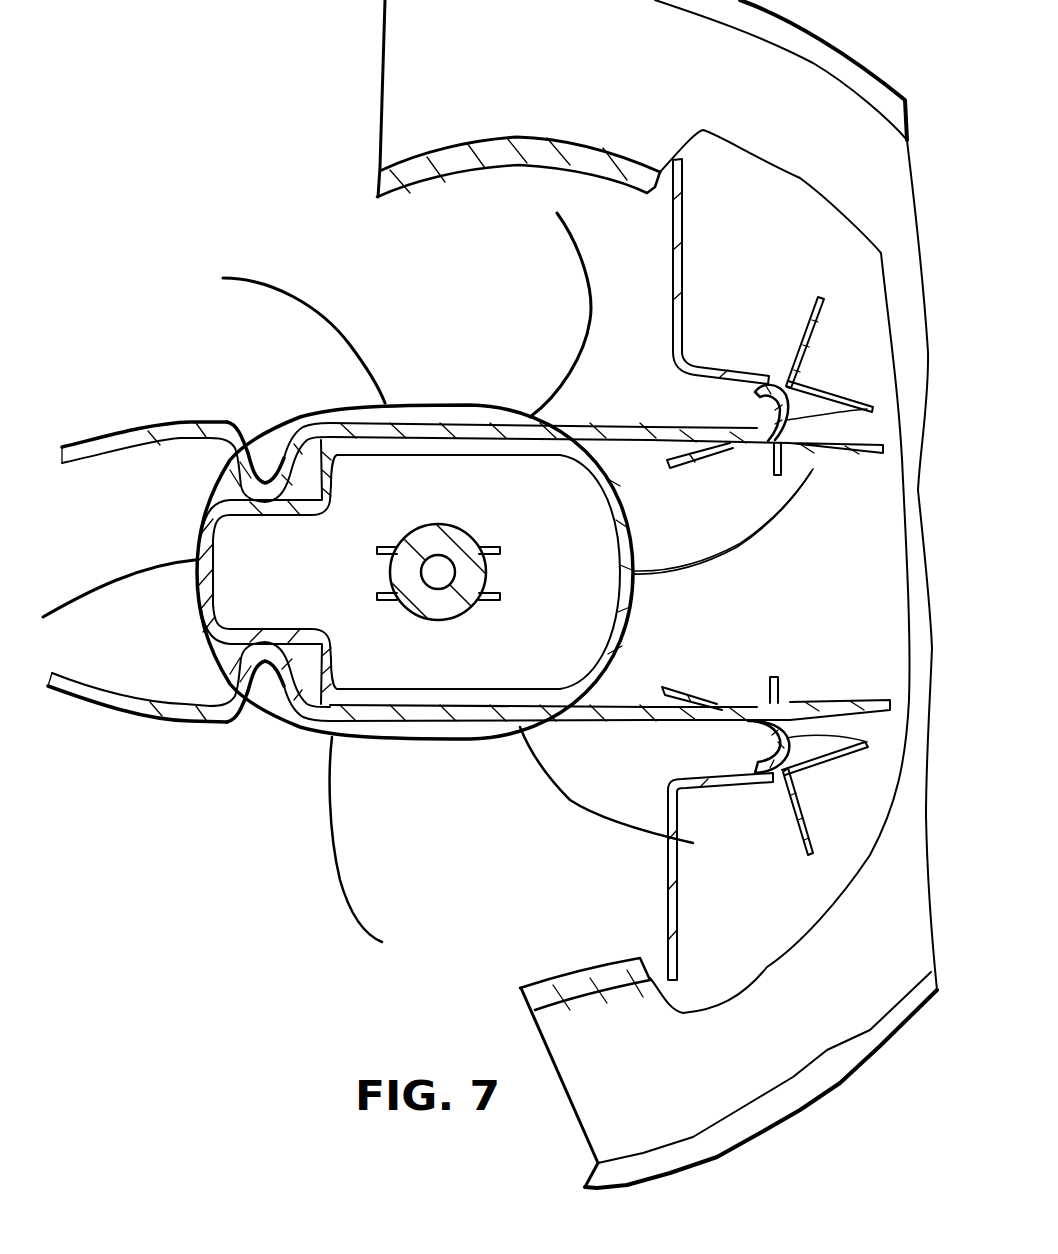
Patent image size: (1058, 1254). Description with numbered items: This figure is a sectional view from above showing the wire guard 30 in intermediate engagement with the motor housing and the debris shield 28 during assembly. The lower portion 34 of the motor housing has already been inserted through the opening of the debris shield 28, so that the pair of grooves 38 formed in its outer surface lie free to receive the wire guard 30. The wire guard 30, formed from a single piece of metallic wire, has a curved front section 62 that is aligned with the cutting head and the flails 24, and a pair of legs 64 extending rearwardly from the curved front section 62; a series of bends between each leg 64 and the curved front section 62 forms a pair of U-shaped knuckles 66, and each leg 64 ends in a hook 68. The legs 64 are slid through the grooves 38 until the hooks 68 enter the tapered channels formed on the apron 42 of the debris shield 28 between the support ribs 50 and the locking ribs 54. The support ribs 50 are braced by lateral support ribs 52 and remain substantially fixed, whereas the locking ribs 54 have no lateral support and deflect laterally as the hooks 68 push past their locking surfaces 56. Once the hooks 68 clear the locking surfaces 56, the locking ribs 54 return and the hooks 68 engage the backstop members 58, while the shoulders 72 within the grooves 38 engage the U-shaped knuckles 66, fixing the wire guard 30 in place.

The flails 24 is at (332, 317).
The debris shield 28 is at (378, 96).
The wire guard 30 is at (165, 727).
The lower portion 34 is at (497, 737).
The grooves 38 is at (447, 412).
The apron 42 is at (560, 143).
The support ribs 50 is at (683, 465).
The lateral support ribs 52 is at (772, 462).
The locking ribs 54 is at (698, 367).
The locking surfaces 56 is at (766, 378).
The backstop members 58 is at (790, 362).
The curved front section 62 is at (95, 697).
The legs 64 is at (603, 420).
The U-shaped knuckles 66 is at (243, 492).
The hooks 68 is at (847, 578).
The shoulders 72 is at (333, 508).